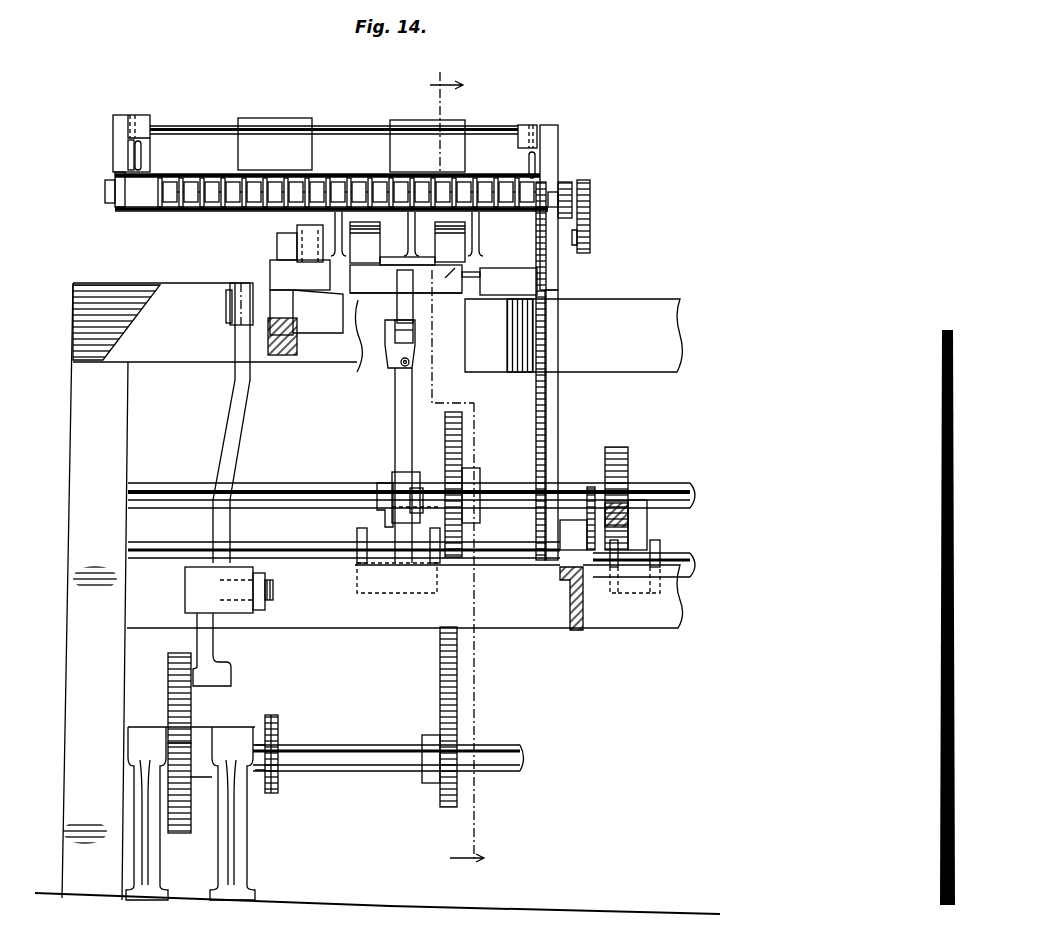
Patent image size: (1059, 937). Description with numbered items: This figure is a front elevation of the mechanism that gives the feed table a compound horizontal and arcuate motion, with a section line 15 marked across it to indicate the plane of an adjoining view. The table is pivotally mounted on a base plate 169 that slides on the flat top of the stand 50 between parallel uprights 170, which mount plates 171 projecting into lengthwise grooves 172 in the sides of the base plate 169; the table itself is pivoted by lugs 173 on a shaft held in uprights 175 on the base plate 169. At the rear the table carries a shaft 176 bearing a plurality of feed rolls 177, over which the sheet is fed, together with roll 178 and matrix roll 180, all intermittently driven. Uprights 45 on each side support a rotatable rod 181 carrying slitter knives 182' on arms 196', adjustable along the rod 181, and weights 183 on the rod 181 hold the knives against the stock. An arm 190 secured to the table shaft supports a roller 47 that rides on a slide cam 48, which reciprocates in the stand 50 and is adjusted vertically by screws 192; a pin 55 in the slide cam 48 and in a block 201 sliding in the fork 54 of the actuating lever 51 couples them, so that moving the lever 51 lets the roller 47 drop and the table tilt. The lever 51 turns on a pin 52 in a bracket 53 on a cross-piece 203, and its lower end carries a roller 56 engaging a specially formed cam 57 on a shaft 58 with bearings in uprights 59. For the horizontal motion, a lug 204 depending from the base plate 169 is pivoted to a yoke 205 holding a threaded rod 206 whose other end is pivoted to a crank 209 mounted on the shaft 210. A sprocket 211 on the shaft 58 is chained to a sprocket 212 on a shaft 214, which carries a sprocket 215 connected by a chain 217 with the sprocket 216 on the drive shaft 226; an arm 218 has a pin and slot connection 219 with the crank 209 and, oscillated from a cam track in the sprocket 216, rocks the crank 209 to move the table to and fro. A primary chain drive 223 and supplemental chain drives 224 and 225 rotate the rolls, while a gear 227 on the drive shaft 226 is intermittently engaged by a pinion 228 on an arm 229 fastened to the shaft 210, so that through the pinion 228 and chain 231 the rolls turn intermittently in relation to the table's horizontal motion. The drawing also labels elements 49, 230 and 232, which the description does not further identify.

The section line 15- 15 is at (462, 475).
The uprights 45 is at (566, 147).
The roller 47 is at (284, 279).
The slide cam 48 is at (285, 305).
The bracket plate 49 is at (327, 330).
The stand 50 is at (136, 441).
The actuating lever 51 is at (232, 443).
The pin 52 is at (274, 590).
The bracket 53 is at (250, 613).
The fork 54 is at (240, 283).
The pin 55 is at (230, 318).
The roller 56 is at (168, 683).
The cam 57 is at (191, 708).
The shaft 58 is at (268, 770).
The uprights 59 is at (218, 865).
The base plate 169 is at (406, 284).
The uprights 170 is at (499, 286).
The plates 171 is at (506, 268).
The lengthwise grooves 172 is at (441, 281).
The lugs 173 is at (486, 233).
The uprights 175 is at (408, 242).
The shaft 176 is at (126, 207).
The feed rolls 177 is at (253, 207).
The roll 178 is at (145, 212).
The matrix roll 180 is at (583, 240).
The rod 181 is at (341, 126).
The slitter knives 182' is at (335, 161).
The weights 183 is at (470, 157).
The arm 190 is at (278, 252).
The screws 192 is at (288, 356).
The arms 196' is at (308, 135).
The block 201 is at (231, 296).
The cross-piece 203 is at (354, 617).
The lug 204 is at (413, 308).
The yoke 205 is at (413, 335).
The threaded rod 206 is at (410, 364).
The crank 209 is at (396, 412).
The shaft 210 is at (312, 549).
The sprocket 211 is at (279, 727).
The sprocket 212 is at (273, 713).
The shaft 214 is at (386, 772).
The sprocket 215 is at (434, 785).
The sprocket 216 is at (473, 468).
The chain 217 is at (459, 676).
The arm 218 is at (377, 515).
The pin and slot connection 219 is at (386, 480).
The primary chain drive 223 is at (536, 400).
The supplemental chain drive 224 is at (566, 182).
The supplemental chain drive 225 is at (591, 193).
The drive shaft 226 is at (306, 490).
The gear 227 is at (629, 470).
The pinion 228 is at (647, 522).
The arm 229 is at (637, 538).
The bearing 230 is at (596, 567).
The chain 231 is at (589, 487).
The bar 232 is at (559, 416).